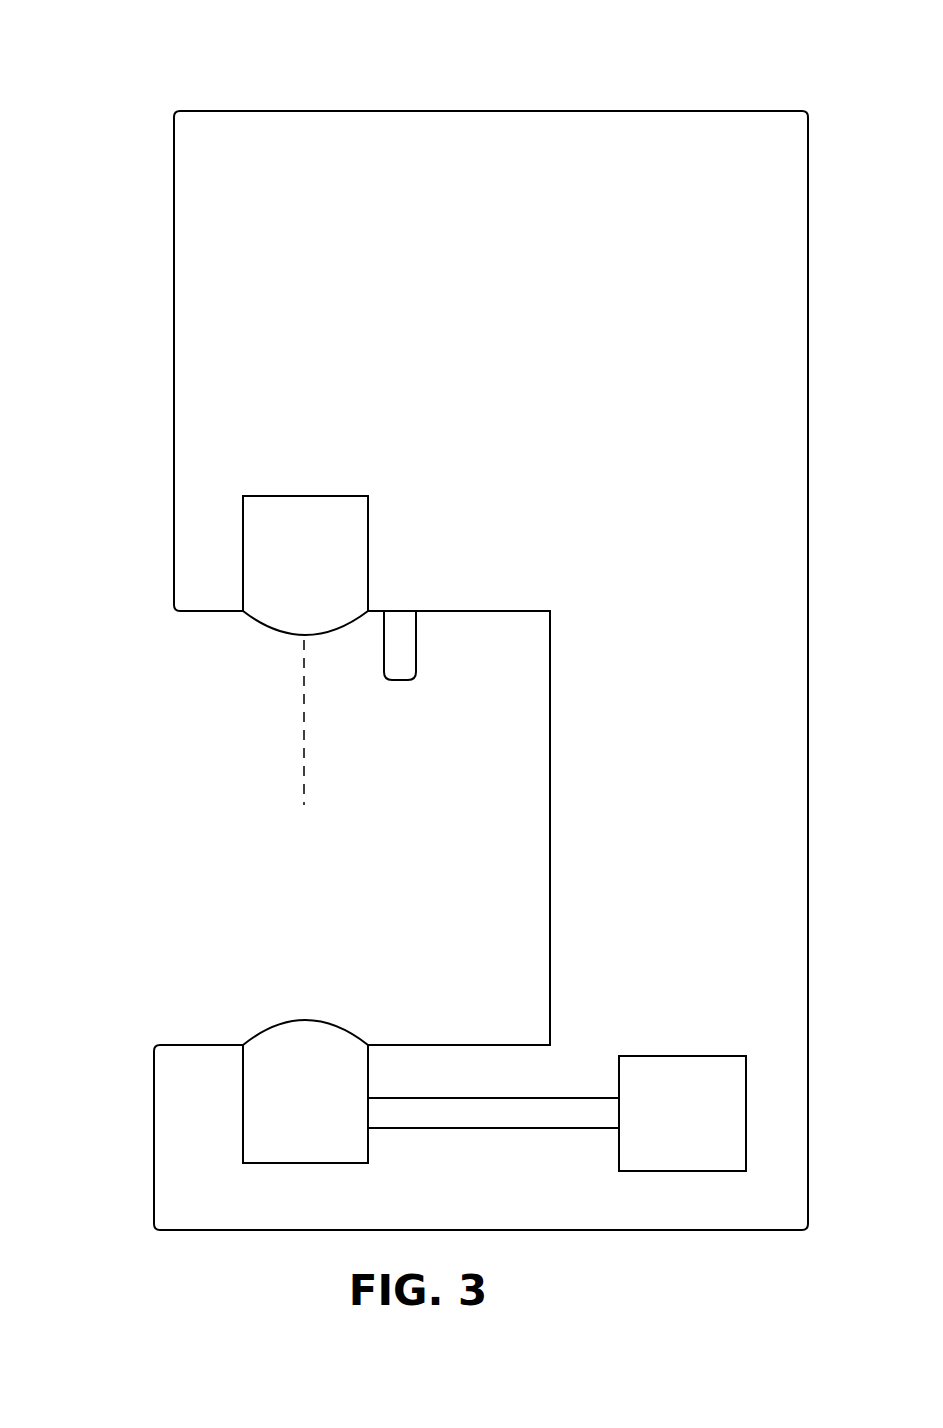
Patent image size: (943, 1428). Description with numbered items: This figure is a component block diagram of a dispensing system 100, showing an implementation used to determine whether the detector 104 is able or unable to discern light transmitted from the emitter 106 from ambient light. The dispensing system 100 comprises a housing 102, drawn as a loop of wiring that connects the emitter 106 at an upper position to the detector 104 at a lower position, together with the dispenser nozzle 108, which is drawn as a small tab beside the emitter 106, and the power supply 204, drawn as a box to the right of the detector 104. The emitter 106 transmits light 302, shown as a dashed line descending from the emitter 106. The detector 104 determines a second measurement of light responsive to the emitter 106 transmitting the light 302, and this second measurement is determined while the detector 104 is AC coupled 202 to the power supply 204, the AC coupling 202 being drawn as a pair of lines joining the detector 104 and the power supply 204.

The dispensing system 100 is at (160, 58).
The housing 102 is at (552, 111).
The detector 104 is at (258, 1035).
The emitter 106 is at (264, 632).
The dispenser nozzle 108 is at (399, 681).
The AC coupling 202 is at (490, 1098).
The power supply 204 is at (708, 1056).
The light 302 is at (304, 800).